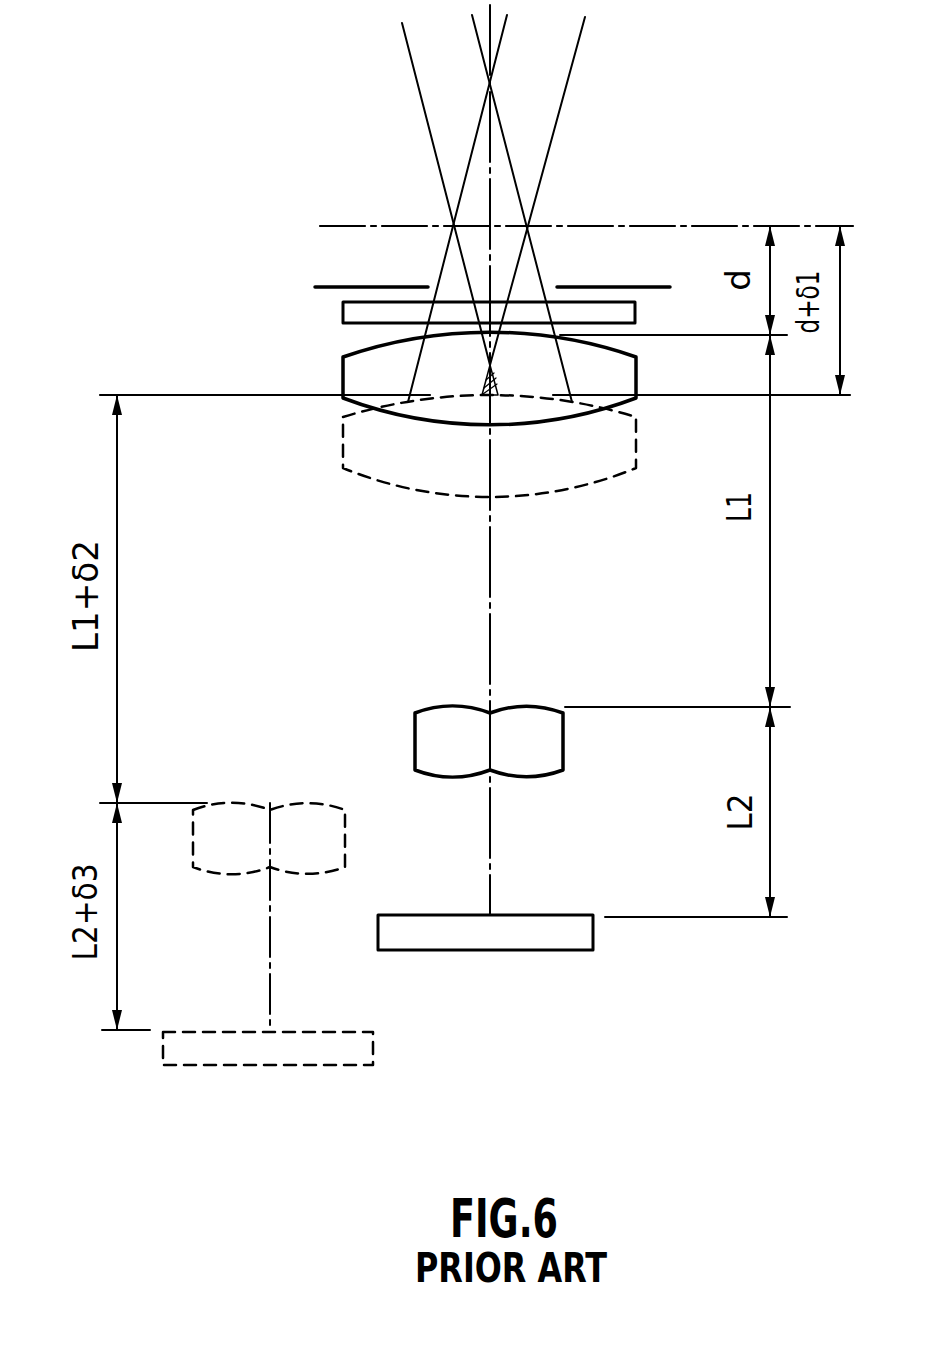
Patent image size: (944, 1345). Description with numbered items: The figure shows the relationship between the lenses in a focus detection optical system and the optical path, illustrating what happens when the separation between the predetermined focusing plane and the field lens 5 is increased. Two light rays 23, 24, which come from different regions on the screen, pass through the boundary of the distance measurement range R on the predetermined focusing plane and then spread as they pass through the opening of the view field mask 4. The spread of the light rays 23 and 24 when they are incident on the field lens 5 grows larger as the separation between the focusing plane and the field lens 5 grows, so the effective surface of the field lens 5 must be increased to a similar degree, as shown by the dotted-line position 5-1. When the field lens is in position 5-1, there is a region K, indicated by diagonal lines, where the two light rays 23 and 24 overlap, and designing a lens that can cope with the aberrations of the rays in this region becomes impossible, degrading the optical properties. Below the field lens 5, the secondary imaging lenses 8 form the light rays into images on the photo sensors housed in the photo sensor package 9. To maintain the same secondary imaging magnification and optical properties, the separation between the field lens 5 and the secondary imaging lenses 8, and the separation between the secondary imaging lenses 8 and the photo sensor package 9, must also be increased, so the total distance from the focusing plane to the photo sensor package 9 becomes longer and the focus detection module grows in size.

The distance measurement range R is at (505, 196).
The light ray 23 is at (460, 256).
The light ray 24 is at (518, 270).
The view field mask 4 is at (636, 316).
The field lens 5 is at (343, 371).
The field lens position 5-1 is at (343, 440).
The overlap region K is at (487, 386).
The secondary imaging lenses 8 is at (563, 750).
The photo sensor package 9 is at (585, 938).